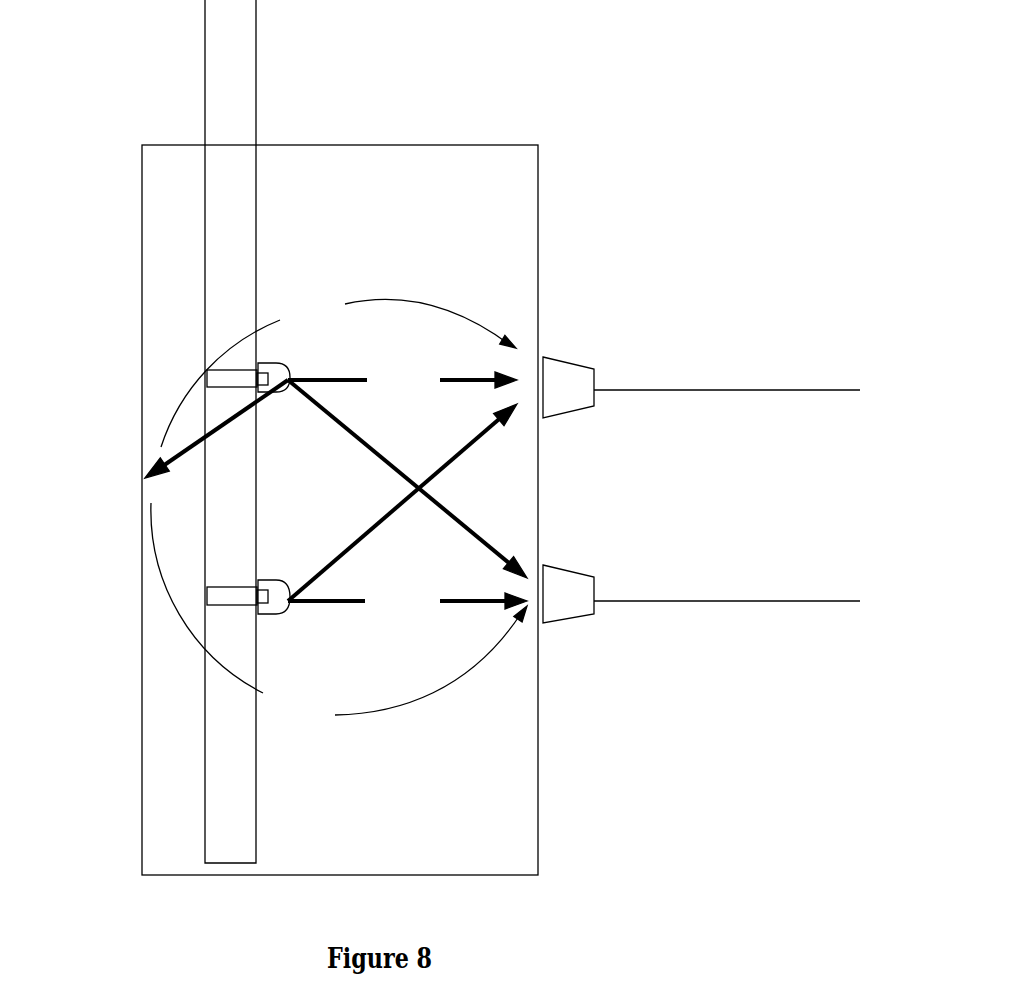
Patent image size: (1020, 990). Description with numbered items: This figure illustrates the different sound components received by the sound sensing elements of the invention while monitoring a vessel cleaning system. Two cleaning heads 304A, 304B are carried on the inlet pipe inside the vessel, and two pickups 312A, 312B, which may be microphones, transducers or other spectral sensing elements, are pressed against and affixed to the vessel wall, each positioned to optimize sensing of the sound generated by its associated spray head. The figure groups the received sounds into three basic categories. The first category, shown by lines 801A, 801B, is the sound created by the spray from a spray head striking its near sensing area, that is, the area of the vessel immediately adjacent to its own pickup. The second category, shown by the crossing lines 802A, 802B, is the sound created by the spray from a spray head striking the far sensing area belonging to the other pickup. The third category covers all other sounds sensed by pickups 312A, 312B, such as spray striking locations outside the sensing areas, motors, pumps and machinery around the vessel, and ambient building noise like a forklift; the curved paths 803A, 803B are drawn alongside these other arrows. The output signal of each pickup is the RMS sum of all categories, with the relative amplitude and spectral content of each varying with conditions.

The cleaning head 304A is at (268, 363).
The cleaning head 304B is at (265, 614).
The pickup 312A is at (572, 383).
The pickup 312B is at (562, 592).
The line illustrating category one sound 801A is at (402, 381).
The line illustrating category one sound 801B is at (407, 602).
The line illustrating category two sound 802A is at (400, 502).
The line illustrating category two sound 802B is at (407, 479).
The reflected acoustic path to receiver A 803A is at (338, 363).
The reflected acoustic path to receiver B 803B is at (339, 614).